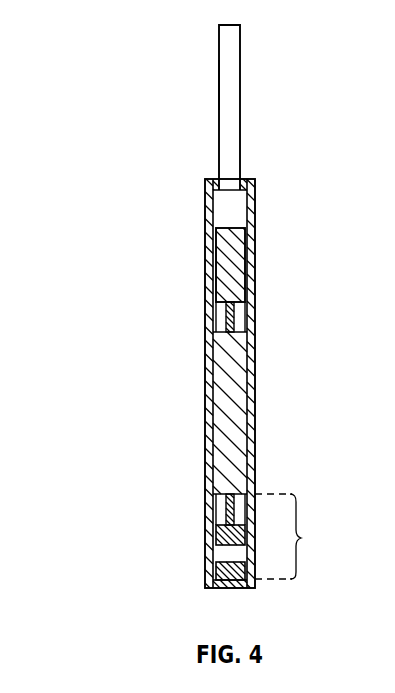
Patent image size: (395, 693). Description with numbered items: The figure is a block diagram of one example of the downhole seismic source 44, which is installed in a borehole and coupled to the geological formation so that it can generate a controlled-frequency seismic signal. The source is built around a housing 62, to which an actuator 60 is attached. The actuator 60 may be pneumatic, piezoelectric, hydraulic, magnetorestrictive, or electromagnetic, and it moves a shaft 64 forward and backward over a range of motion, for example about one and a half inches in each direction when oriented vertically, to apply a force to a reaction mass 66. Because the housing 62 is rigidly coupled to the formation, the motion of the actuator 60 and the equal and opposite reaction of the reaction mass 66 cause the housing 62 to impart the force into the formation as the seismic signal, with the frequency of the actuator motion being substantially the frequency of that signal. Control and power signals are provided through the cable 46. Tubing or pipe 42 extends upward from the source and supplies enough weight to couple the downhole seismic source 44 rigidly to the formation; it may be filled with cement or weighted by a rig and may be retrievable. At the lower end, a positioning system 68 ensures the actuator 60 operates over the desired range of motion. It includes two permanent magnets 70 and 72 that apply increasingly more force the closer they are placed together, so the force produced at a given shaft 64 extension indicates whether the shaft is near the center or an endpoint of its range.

The tubing or pipe 42 is at (240, 78).
The downhole seismic source 44 is at (205, 310).
The cable 46 is at (219, 83).
The actuator 60 is at (240, 378).
The housing 62 is at (255, 207).
The shaft 64 is at (235, 318).
The reaction mass 66 is at (240, 258).
The positioning system 68 is at (301, 538).
The permanent magnet 70 is at (216, 536).
The permanent magnet 72 is at (216, 570).